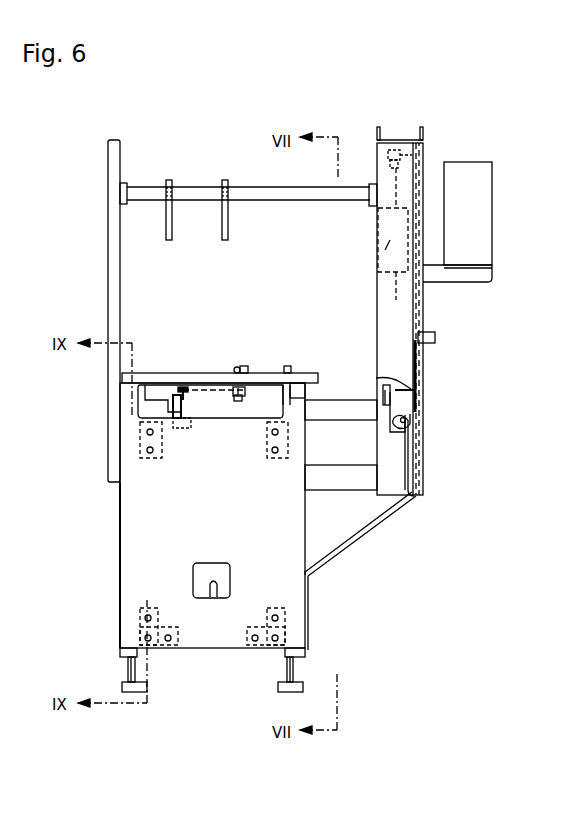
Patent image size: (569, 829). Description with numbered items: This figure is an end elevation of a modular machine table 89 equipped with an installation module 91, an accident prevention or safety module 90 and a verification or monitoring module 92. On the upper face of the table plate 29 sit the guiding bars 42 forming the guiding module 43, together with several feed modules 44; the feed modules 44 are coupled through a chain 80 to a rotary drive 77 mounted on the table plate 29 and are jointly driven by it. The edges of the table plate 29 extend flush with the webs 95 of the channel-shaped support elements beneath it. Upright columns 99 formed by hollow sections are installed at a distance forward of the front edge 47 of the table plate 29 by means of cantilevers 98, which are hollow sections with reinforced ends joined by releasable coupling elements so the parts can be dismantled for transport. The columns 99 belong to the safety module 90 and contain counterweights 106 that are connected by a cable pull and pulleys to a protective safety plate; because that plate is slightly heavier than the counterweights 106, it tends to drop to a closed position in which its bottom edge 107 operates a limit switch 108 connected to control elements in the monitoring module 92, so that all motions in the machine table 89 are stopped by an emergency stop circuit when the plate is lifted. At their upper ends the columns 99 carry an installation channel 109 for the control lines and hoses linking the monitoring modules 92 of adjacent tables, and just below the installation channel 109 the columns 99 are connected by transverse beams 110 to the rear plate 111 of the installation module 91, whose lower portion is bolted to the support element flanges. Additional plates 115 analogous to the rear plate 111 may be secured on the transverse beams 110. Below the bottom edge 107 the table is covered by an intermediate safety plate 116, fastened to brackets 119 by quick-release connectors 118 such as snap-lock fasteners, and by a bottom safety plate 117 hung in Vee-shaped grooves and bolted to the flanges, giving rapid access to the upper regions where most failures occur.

The table plate 29 is at (304, 366).
The guiding bars 42 is at (286, 366).
The guiding module 43 is at (286, 355).
The feed modules 44 is at (236, 367).
The front edge 47 is at (322, 378).
The rotary drive 77 is at (200, 406).
The chain 80 is at (205, 395).
The machine table 89 is at (100, 494).
The safety module 90 is at (408, 122).
The installation module 91 is at (128, 178).
The verification or monitoring module 92 is at (500, 175).
The webs 95 is at (213, 628).
The cantilevers 98 is at (336, 412).
The upright columns 99 is at (412, 498).
The counterweights 106 is at (383, 250).
The bottom edge 107 is at (425, 345).
The limit switch 108 is at (418, 388).
The installation channel 109 is at (424, 136).
The transverse beams 110 is at (194, 192).
The rear plate 111 is at (116, 168).
The additional plates 115 is at (229, 232).
The intermediate safety plate 116 is at (418, 412).
The bottom safety plate 117 is at (416, 497).
The quick-release connectors 118 is at (418, 400).
The brackets 119 is at (412, 437).